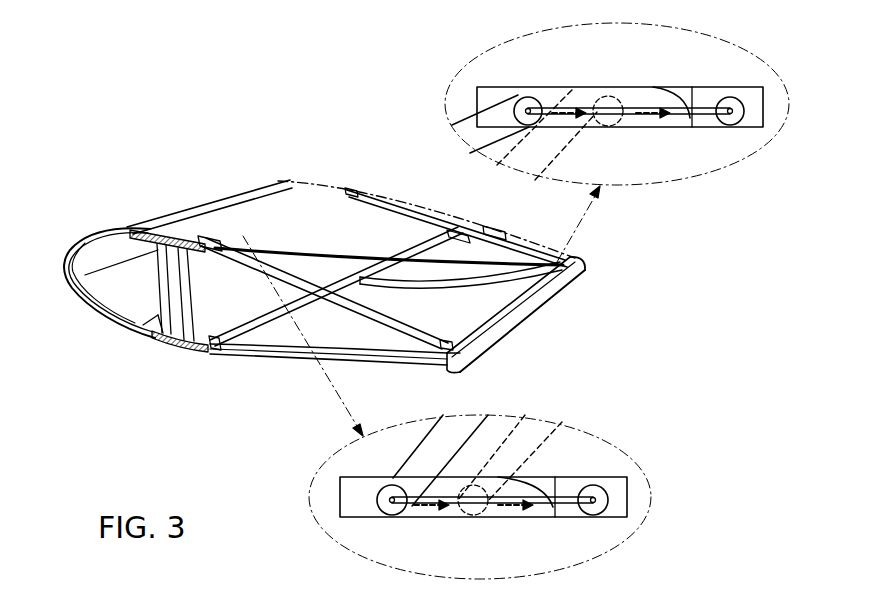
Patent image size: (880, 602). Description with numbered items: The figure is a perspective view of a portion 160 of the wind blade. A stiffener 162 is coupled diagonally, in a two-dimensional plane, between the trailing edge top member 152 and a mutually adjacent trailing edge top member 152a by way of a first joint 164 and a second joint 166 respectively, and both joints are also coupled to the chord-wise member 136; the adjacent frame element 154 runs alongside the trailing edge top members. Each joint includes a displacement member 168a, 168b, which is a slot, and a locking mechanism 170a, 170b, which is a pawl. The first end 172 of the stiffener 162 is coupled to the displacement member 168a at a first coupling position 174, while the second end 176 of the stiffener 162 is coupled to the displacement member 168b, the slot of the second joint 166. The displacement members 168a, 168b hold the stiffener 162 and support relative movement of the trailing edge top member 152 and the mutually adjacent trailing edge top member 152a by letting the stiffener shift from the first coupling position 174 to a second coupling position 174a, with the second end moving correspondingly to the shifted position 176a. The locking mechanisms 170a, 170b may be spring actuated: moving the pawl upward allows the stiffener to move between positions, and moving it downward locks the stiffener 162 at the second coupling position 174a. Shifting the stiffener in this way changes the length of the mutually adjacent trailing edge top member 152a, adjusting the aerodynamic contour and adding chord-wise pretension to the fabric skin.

The portion of the wind blade 160 is at (145, 44).
The chord-wise member 136 is at (214, 359).
The side rail 154 is at (259, 359).
The first end 172 is at (243, 256).
The trailing edge top member 152 is at (343, 300).
The mutually adjacent trailing edge top member 152a is at (517, 254).
The stiffener 162 is at (341, 254).
The second end 176 is at (538, 296).
The rail phantom position 176a is at (603, 89).
The second joint 166 is at (716, 128).
The displacement member 168b is at (535, 86).
The locking mechanism 170b is at (676, 87).
The first joint 164 is at (334, 497).
The displacement member 168a is at (390, 513).
The first coupling position 174 is at (375, 486).
The second coupling position 174a is at (488, 520).
The locking mechanism 170a is at (557, 487).